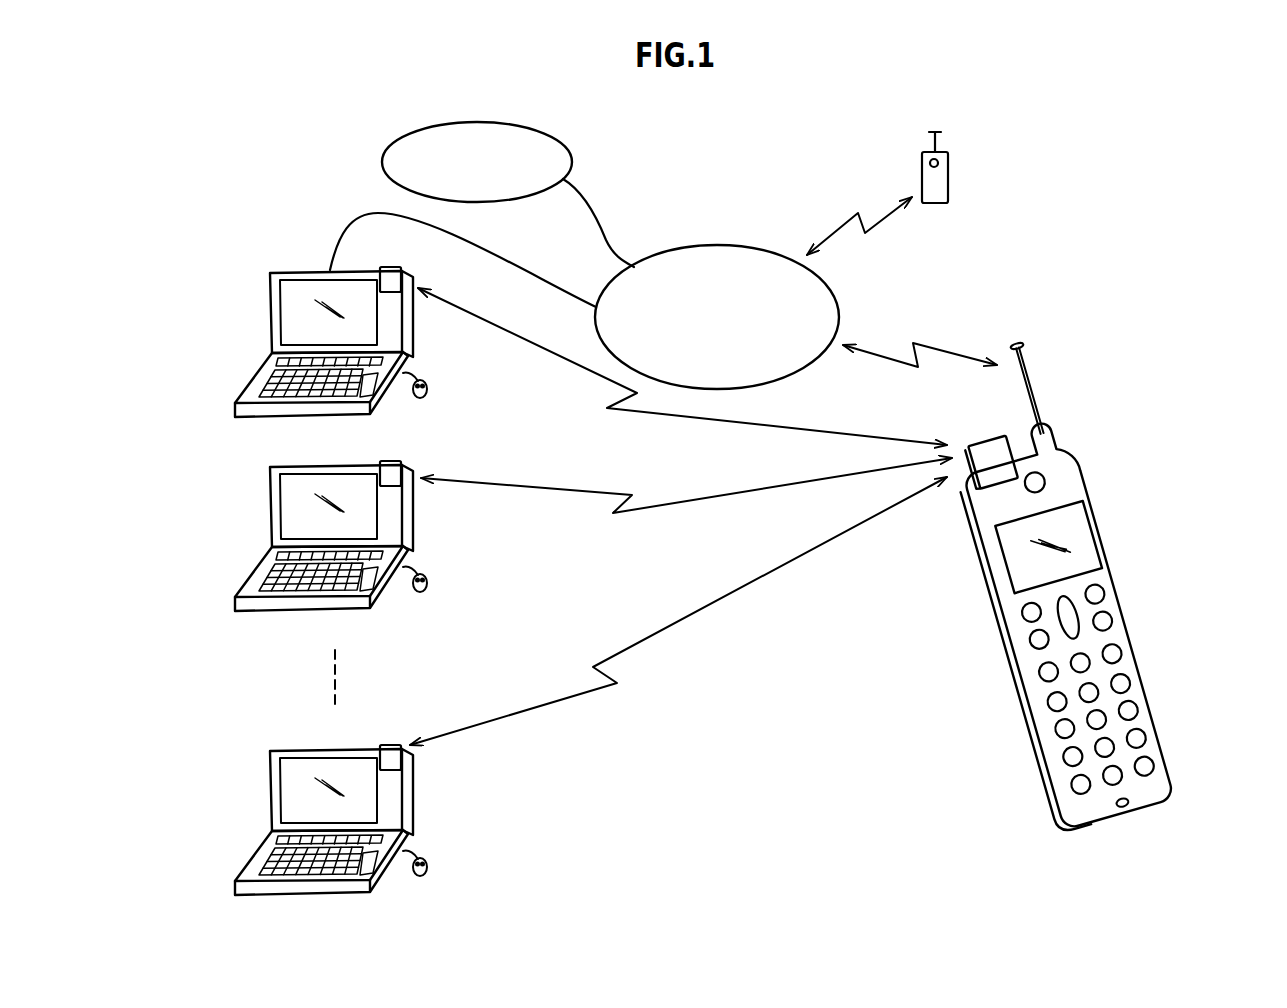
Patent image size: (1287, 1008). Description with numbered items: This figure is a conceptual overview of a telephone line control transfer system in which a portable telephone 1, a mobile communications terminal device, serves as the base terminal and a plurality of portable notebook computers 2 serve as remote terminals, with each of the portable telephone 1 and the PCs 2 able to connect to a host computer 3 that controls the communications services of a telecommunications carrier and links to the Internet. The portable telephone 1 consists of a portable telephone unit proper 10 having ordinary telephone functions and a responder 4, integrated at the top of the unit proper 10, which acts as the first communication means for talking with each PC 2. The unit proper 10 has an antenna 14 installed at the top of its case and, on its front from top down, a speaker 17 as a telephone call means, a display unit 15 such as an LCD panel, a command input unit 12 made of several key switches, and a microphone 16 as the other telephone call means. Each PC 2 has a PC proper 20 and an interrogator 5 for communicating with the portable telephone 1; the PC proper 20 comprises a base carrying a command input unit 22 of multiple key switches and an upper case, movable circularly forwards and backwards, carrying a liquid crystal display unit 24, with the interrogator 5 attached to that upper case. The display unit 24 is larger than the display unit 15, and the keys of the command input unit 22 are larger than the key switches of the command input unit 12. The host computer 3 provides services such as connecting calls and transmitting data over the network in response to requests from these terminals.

The portable telephone 1 is at (1212, 553).
The portable notebook computer 2 is at (285, 558).
The host computer 3 is at (828, 292).
The responder 4 is at (1003, 450).
The interrogator 5 is at (387, 267).
The portable telephone unit proper 10 is at (1107, 577).
The command input unit 12 is at (1123, 583).
The antenna 14 is at (1036, 393).
The display unit 15 is at (1083, 533).
The microphone 16 is at (1126, 808).
The speaker 17 is at (1045, 478).
The PC proper 20 is at (268, 281).
The command input unit 22 is at (258, 382).
The display unit 24 is at (298, 287).